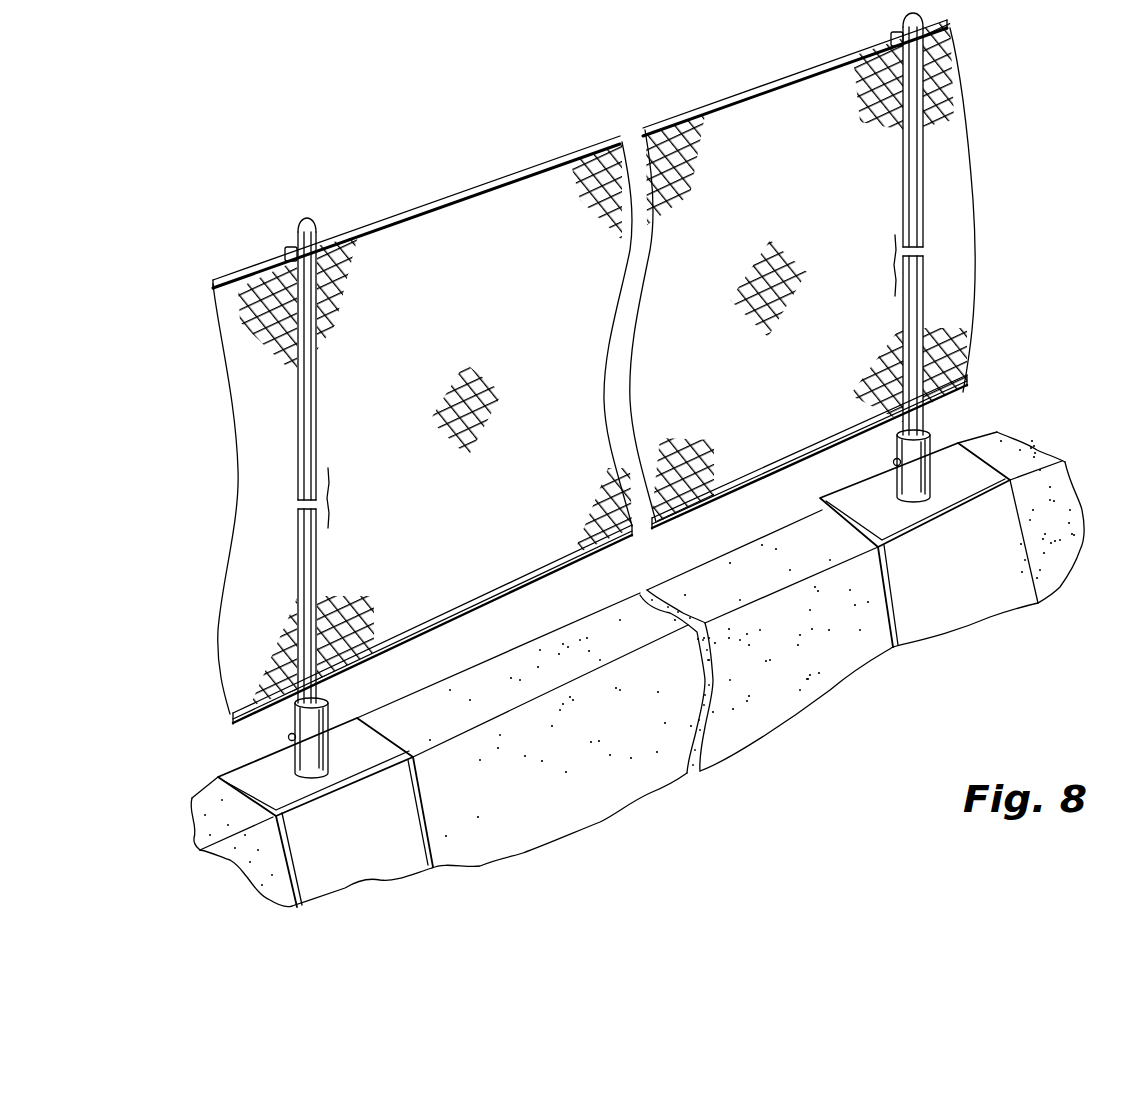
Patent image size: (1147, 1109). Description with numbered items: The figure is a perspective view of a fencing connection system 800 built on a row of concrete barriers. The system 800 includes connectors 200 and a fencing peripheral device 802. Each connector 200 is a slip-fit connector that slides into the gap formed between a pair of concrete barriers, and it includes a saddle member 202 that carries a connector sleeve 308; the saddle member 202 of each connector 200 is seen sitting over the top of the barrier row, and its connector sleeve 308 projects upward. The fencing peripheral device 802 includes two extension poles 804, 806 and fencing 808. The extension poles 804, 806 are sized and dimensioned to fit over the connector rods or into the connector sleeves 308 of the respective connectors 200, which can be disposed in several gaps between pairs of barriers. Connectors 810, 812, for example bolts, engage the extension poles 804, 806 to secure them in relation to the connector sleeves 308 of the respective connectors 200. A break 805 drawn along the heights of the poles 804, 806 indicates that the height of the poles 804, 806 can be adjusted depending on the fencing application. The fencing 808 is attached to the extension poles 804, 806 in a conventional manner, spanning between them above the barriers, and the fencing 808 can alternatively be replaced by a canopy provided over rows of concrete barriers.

The fencing connection system 800 is at (256, 123).
The fencing peripheral device 802 is at (650, 109).
The extension pole 804 is at (311, 454).
The extension pole 806 is at (913, 220).
The break 805 is at (611, 381).
The fencing 808 is at (358, 270).
The connector 810 is at (289, 737).
The connector 812 is at (894, 462).
The connector 200 is at (978, 425).
The saddle member 202 is at (1046, 614).
The connector sleeve 308 is at (927, 465).